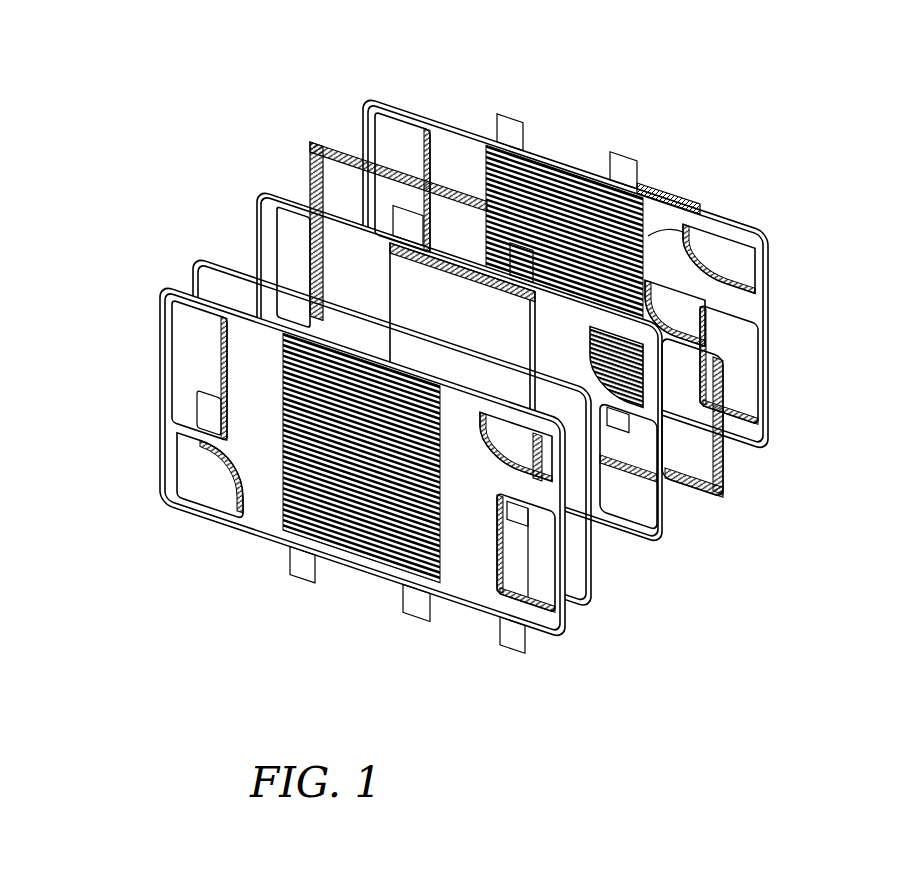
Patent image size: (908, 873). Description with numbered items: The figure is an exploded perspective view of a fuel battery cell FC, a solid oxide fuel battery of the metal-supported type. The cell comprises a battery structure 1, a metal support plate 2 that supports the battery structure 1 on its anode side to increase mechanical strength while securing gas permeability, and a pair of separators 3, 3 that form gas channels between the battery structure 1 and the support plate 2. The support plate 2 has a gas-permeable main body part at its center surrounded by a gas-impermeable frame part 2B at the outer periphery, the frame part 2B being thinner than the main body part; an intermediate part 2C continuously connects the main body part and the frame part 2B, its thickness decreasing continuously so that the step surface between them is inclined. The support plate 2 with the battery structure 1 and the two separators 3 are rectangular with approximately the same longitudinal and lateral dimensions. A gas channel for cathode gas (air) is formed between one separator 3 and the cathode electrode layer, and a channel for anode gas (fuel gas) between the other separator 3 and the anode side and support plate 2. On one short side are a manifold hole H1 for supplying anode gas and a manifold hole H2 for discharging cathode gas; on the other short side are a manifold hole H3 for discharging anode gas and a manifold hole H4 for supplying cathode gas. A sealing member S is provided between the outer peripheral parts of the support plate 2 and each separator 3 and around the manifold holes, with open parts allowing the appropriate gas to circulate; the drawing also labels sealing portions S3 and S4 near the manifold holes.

The fuel battery cell FC is at (463, 384).
The battery structure 1 is at (405, 298).
The support plate 2 is at (350, 221).
The frame part 2B is at (600, 237).
The intermediate part 2C is at (558, 333).
The separator 3 is at (462, 115).
The manifold hole H1 is at (177, 470).
The manifold hole H2 is at (385, 98).
The manifold hole H3 is at (737, 263).
The manifold hole H4 is at (750, 367).
The sealing member S is at (652, 372).
The third seal portion S3 is at (651, 242).
The fourth seal portion S4 is at (661, 194).